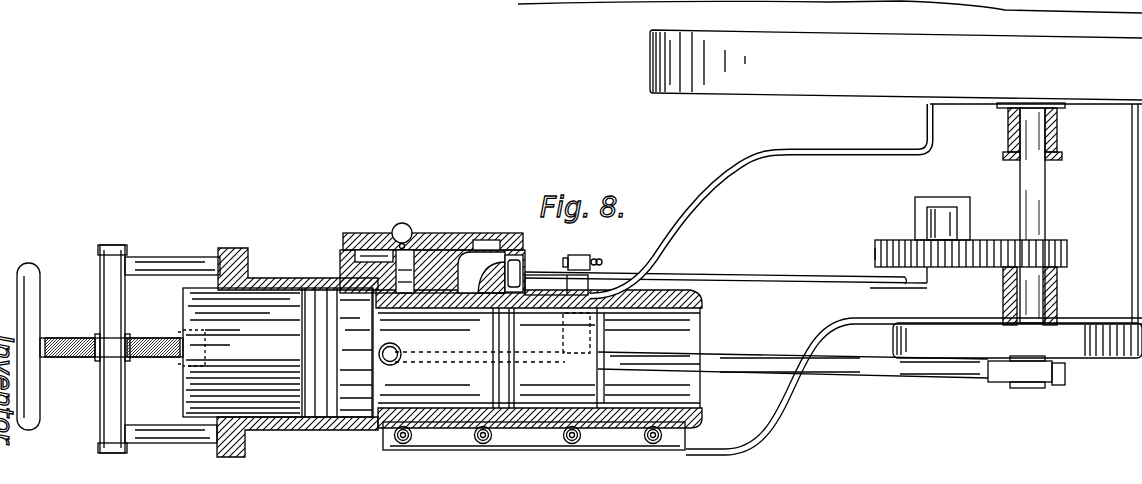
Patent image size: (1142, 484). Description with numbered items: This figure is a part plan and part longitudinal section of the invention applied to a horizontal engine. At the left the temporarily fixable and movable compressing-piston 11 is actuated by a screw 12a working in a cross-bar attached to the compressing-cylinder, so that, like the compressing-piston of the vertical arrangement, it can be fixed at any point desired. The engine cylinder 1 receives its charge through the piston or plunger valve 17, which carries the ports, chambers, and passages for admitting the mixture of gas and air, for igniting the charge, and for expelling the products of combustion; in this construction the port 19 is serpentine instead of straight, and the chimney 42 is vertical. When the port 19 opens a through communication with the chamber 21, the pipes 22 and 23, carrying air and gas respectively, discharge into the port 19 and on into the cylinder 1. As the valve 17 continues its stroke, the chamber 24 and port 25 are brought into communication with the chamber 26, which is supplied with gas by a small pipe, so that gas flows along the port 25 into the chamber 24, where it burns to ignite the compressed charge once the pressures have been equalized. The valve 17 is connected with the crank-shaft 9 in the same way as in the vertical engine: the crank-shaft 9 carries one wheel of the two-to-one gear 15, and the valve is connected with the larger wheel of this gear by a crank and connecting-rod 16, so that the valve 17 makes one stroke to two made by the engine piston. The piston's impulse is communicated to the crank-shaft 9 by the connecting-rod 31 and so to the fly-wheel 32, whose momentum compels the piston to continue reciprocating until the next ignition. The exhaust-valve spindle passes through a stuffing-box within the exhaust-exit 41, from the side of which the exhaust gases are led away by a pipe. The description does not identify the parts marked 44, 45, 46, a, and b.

The cylinder 1 is at (647, 358).
The crank-shaft 9 is at (1031, 214).
The compressing-piston 11 is at (278, 352).
The screw 12a is at (111, 346).
The two-to-one gear 15 is at (956, 218).
The crank and connecting-rod 16 is at (727, 200).
The piston or plunger valve 17 is at (424, 263).
The port 19 is at (481, 266).
The chamber 21 is at (563, 333).
The pipe 22 is at (405, 274).
The pipe 23 is at (374, 251).
The chamber 24 is at (405, 271).
The port 25 is at (405, 286).
The chamber 26 is at (405, 298).
The connecting-rod 31 is at (831, 370).
The fly-wheel 32 is at (896, 65).
The exhaust-exit 41 is at (488, 358).
The chimney 42 is at (402, 236).
The check valve 44 is at (528, 263).
The passage 45 is at (491, 318).
The valve fitting 46 is at (592, 262).
The gear wheel a is at (980, 253).
The gear wheel end b is at (867, 251).